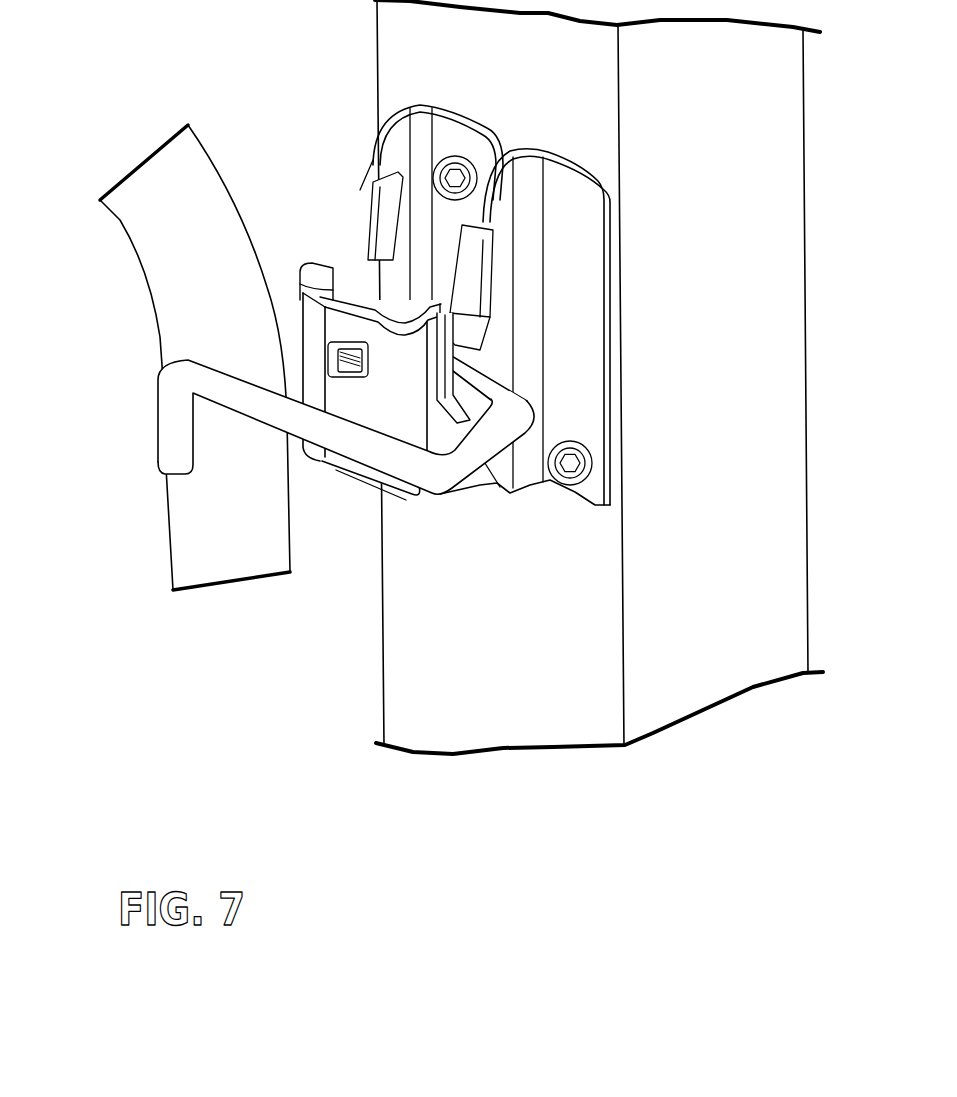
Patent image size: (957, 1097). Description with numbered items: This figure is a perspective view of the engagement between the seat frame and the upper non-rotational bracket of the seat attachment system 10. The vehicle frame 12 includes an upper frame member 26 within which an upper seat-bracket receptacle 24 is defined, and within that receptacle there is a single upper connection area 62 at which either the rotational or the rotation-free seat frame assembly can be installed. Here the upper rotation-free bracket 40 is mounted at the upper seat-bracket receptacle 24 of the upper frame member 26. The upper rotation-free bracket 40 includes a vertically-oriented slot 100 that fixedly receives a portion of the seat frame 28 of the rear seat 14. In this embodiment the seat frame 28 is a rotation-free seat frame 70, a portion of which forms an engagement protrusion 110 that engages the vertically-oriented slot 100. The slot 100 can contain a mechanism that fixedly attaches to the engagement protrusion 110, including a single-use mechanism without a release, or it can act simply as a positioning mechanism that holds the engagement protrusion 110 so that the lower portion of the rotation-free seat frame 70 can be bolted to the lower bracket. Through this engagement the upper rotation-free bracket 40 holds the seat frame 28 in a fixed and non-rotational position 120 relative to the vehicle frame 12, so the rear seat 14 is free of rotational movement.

The seat attachment system 10 is at (131, 58).
The vehicle frame 12 is at (826, 287).
The rear seat 14 is at (104, 234).
The upper seat-bracket receptacle 24 is at (560, 147).
The upper frame member 26 is at (742, 415).
The seat frame 28 is at (142, 273).
The upper rotation-free bracket 40 is at (393, 483).
The upper connection area 62 is at (565, 505).
The rotation-free seat frame 70 is at (208, 180).
The vertically-oriented slot 100 is at (447, 353).
The engagement protrusion 110 is at (352, 447).
The fixed and non-rotational position 120 is at (143, 354).